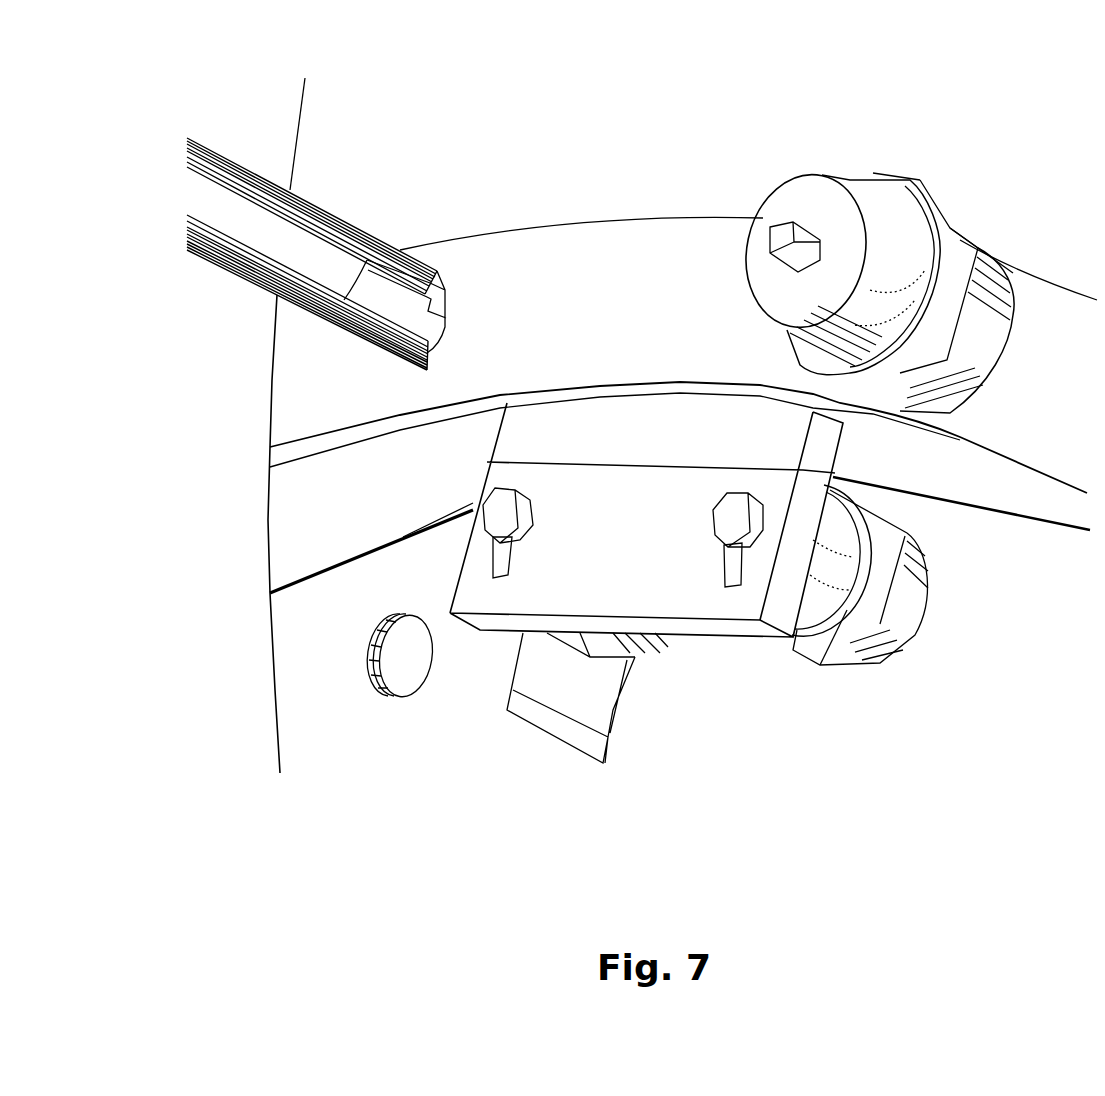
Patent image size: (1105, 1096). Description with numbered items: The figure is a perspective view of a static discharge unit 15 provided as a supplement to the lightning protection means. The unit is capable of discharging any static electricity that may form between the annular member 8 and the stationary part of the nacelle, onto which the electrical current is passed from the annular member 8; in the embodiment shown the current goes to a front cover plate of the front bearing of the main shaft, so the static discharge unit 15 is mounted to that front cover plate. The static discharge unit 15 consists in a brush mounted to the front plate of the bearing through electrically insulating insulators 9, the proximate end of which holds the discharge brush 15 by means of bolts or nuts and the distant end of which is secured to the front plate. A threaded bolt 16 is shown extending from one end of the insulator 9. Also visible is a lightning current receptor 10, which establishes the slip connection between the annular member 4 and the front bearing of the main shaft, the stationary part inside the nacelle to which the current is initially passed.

The annular member 4 is at (222, 365).
The annular member 8 is at (520, 260).
The insulator 9 is at (873, 241).
The lightning current receptor 10 is at (390, 250).
The static discharge unit 15 is at (497, 478).
The threaded bolt 16 is at (783, 225).